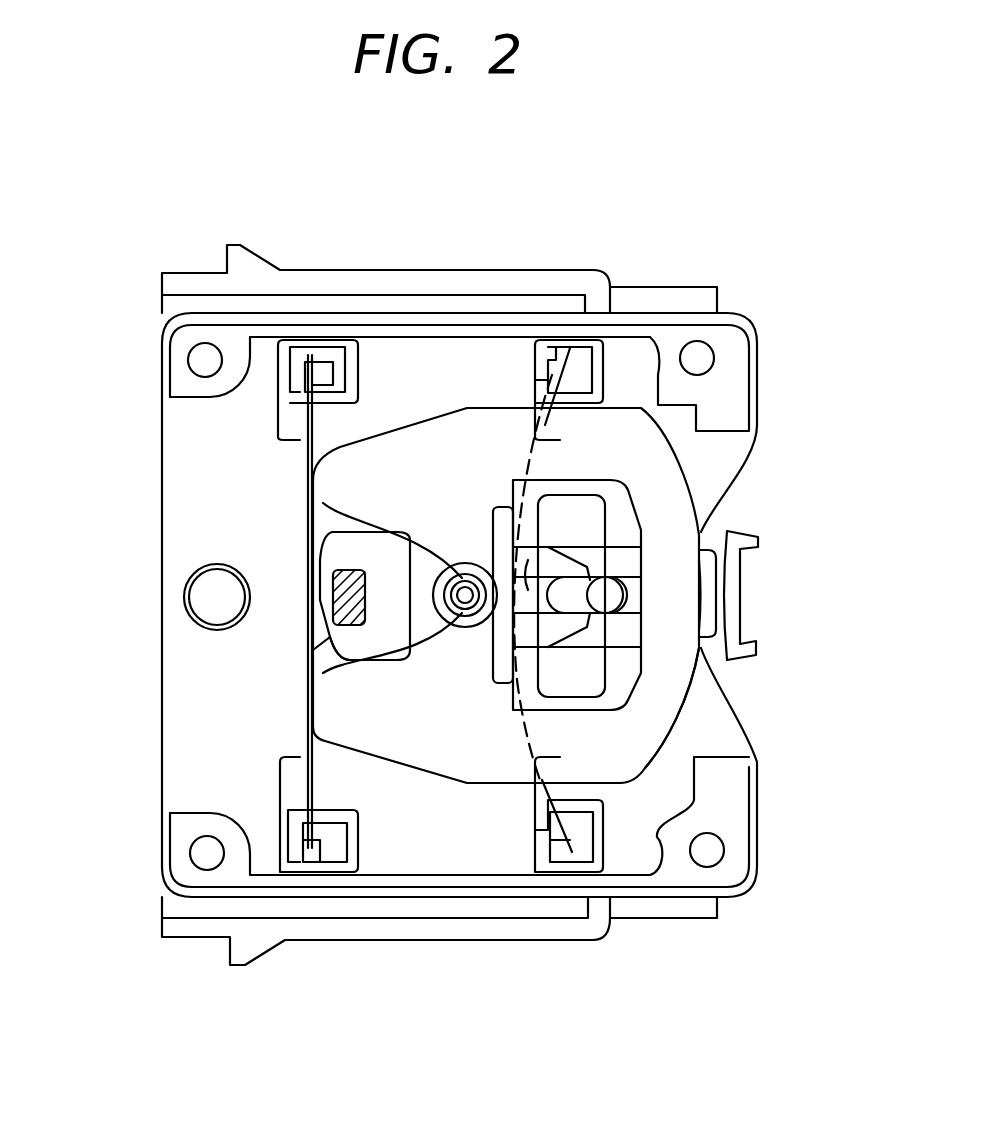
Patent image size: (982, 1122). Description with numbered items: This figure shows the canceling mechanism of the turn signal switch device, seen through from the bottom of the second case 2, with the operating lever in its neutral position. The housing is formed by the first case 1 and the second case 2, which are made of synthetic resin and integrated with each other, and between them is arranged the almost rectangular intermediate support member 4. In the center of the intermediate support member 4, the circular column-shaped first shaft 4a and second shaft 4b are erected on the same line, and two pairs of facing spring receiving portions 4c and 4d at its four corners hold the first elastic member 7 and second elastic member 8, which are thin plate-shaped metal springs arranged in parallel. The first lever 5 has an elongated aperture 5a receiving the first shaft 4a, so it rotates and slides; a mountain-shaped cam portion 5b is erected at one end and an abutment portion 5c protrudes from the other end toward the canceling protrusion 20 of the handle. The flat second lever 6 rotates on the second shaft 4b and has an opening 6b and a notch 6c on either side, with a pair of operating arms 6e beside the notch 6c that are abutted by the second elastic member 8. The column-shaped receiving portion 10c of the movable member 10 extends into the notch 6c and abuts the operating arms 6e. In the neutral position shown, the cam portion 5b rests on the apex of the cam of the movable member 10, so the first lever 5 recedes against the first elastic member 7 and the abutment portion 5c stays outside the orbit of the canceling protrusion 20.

The first case 1 is at (180, 940).
The second case 2 is at (760, 328).
The intermediate support member 4 is at (490, 363).
The first shaft 4a is at (607, 586).
The second shaft 4b is at (465, 580).
The spring receiving portion 4c is at (598, 363).
The spring receiving portion 4d is at (350, 362).
The first lever 5 is at (590, 655).
The elongated aperture 5a is at (631, 600).
The cam portion 5b is at (528, 587).
The abutment portion 5c is at (706, 596).
The second lever 6 is at (452, 780).
The opening 6b is at (617, 700).
The notch 6c is at (360, 653).
The operating arms 6e is at (347, 708).
The first elastic member 7 is at (514, 675).
The second elastic member 8 is at (315, 783).
The movable member 10 is at (316, 630).
The receiving portion 10c is at (350, 593).
The canceling protrusion 20 is at (740, 603).